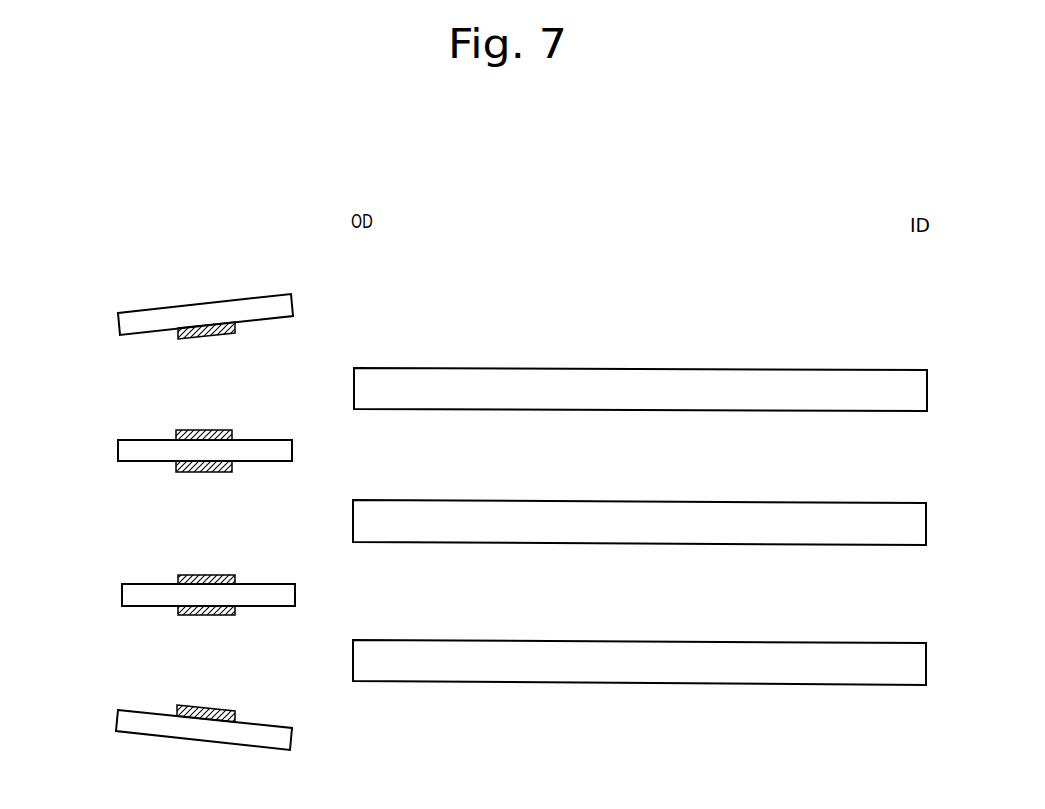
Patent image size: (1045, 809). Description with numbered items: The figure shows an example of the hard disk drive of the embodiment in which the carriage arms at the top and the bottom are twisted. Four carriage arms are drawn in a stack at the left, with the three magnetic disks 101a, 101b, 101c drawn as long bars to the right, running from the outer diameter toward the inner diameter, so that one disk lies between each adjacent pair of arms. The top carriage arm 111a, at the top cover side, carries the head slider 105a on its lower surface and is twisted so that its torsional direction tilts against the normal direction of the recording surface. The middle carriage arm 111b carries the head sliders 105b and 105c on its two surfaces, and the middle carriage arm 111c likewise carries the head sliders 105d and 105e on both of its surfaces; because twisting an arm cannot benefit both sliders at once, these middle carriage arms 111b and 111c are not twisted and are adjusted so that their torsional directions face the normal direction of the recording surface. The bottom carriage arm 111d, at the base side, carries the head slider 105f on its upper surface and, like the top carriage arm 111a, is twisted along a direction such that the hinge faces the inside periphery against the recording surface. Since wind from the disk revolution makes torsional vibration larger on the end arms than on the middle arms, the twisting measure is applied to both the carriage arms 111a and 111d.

The magnetic disk 101a is at (557, 368).
The magnetic disk 101b is at (545, 500).
The magnetic disk 101c is at (542, 640).
The top carriage arm 111a is at (118, 331).
The middle carriage arm 111b is at (118, 457).
The middle carriage arm 111c is at (122, 598).
The bottom carriage arm 111d is at (117, 720).
The head slider 105a is at (182, 337).
The head slider 105b is at (203, 430).
The head slider 105c is at (178, 472).
The head slider 105d is at (207, 575).
The head slider 105e is at (187, 615).
The head slider 105f is at (210, 707).